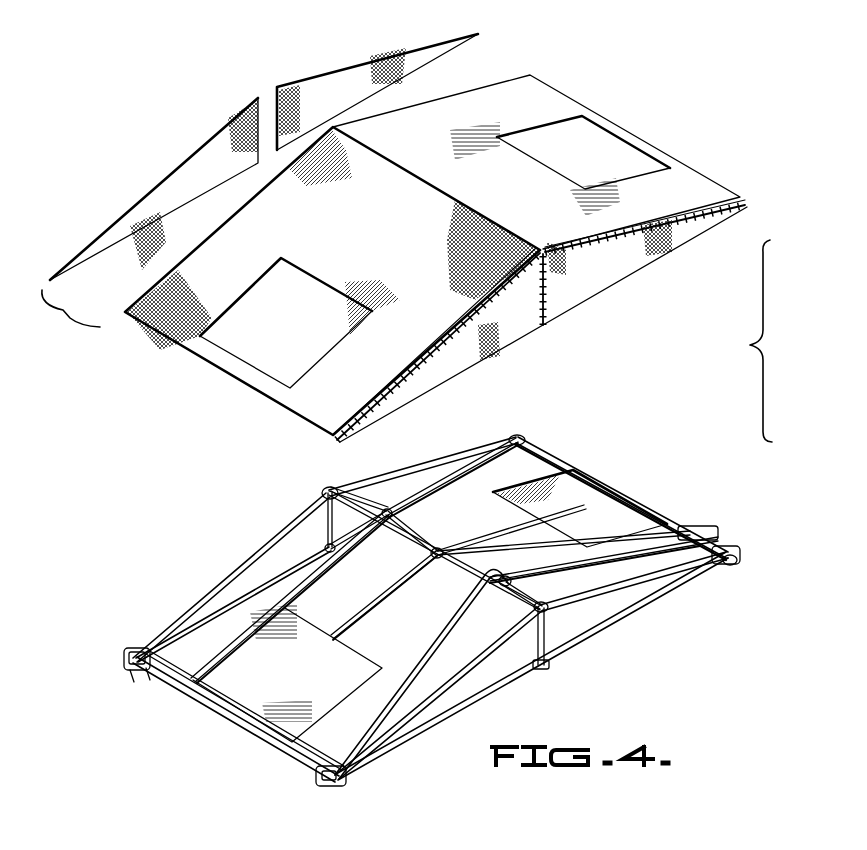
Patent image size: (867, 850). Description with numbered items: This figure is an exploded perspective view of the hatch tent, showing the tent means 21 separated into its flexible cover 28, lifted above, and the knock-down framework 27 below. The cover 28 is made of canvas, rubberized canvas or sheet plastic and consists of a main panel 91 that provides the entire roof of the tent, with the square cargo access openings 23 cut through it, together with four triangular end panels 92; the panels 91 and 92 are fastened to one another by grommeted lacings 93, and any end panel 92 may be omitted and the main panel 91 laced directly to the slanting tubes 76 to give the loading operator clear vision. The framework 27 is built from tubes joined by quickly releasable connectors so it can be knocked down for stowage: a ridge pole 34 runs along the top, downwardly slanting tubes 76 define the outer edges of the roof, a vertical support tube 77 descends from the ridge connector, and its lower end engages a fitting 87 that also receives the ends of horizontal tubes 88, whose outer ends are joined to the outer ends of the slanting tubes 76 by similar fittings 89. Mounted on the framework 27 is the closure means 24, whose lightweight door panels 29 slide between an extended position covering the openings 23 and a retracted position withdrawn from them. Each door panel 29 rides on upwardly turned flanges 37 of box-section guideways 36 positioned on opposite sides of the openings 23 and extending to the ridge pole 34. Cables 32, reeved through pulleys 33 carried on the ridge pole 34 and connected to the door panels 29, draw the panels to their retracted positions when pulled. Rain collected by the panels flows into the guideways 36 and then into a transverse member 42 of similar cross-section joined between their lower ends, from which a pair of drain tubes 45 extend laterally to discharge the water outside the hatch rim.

The tent means 21 is at (241, 50).
The cargo access opening 23 is at (298, 334).
The closure means 24 is at (565, 492).
The framework 27 is at (441, 617).
The flexible cover 28 is at (398, 245).
The door panel 29 is at (608, 526).
The cable 32 is at (512, 528).
The pulley 33 is at (437, 559).
The ridge pole 34 is at (364, 505).
The guideway 36 is at (540, 470).
The upwardly turned flange 37 is at (460, 506).
The transverse member 42 is at (672, 522).
The drain tube 45 is at (140, 675).
The downwardly slanting tube 76 is at (410, 467).
The vertical support tube 77 is at (548, 640).
The fitting 87 is at (545, 672).
The horizontal tube 88 is at (585, 652).
The fitting 89 is at (342, 783).
The main panel 91 is at (420, 246).
The triangular end panel 92 is at (398, 245).
The grommeted lacing 93 is at (335, 441).